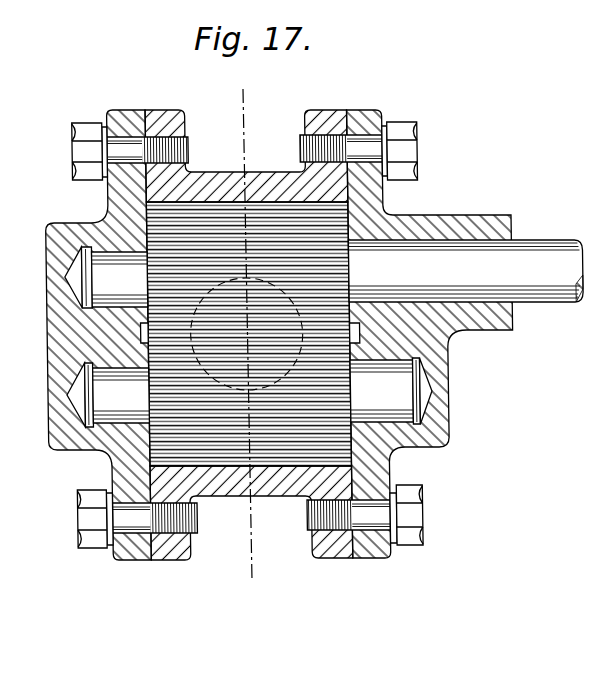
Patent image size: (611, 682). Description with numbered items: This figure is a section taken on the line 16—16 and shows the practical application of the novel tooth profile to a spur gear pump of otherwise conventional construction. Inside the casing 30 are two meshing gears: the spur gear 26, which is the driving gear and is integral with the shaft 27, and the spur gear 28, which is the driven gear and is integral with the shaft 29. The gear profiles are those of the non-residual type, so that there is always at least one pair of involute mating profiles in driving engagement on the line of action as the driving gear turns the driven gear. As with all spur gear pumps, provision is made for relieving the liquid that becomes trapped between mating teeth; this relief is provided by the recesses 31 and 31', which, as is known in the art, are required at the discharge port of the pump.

The section line 16— 16 is at (244, 578).
The spur gear 26 is at (262, 207).
The shaft 27 is at (534, 253).
The spur gear 28 is at (279, 443).
The shaft 29 is at (385, 396).
The casing 30 is at (410, 228).
The recess 31 is at (427, 349).
The recess 31' is at (77, 358).